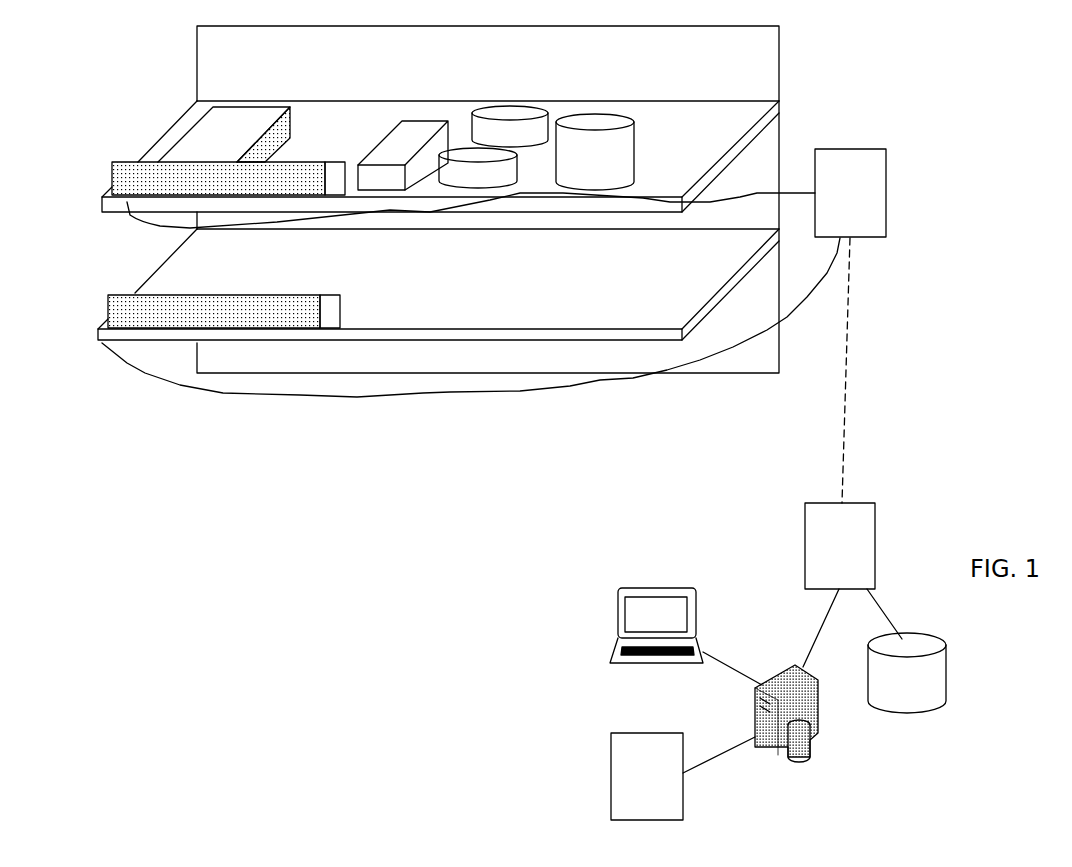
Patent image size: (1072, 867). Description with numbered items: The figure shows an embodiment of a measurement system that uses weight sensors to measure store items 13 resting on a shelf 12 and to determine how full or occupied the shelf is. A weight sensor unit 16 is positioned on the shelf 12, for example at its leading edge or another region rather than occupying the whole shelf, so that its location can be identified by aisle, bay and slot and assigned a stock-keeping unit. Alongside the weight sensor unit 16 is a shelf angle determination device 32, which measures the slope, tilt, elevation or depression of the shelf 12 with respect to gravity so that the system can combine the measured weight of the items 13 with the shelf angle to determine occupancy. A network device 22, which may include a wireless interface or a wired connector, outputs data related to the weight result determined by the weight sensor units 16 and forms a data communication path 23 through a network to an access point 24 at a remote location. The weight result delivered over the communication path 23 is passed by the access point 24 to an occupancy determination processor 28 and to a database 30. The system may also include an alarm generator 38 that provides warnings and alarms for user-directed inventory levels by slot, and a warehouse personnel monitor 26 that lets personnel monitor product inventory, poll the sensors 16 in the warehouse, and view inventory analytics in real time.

The shelf 12 is at (197, 86).
The store items 13 is at (383, 120).
The weight sensor unit 16 is at (123, 188).
The network device 22 is at (850, 193).
The data communication path 23 is at (845, 382).
The access point 24 is at (840, 546).
The warehouse personnel monitor 26 is at (657, 588).
The occupancy determination processor 28 is at (755, 725).
The database 30 is at (907, 673).
The shelf angle determination device 32 is at (325, 153).
The alarm generator 38 is at (647, 776).